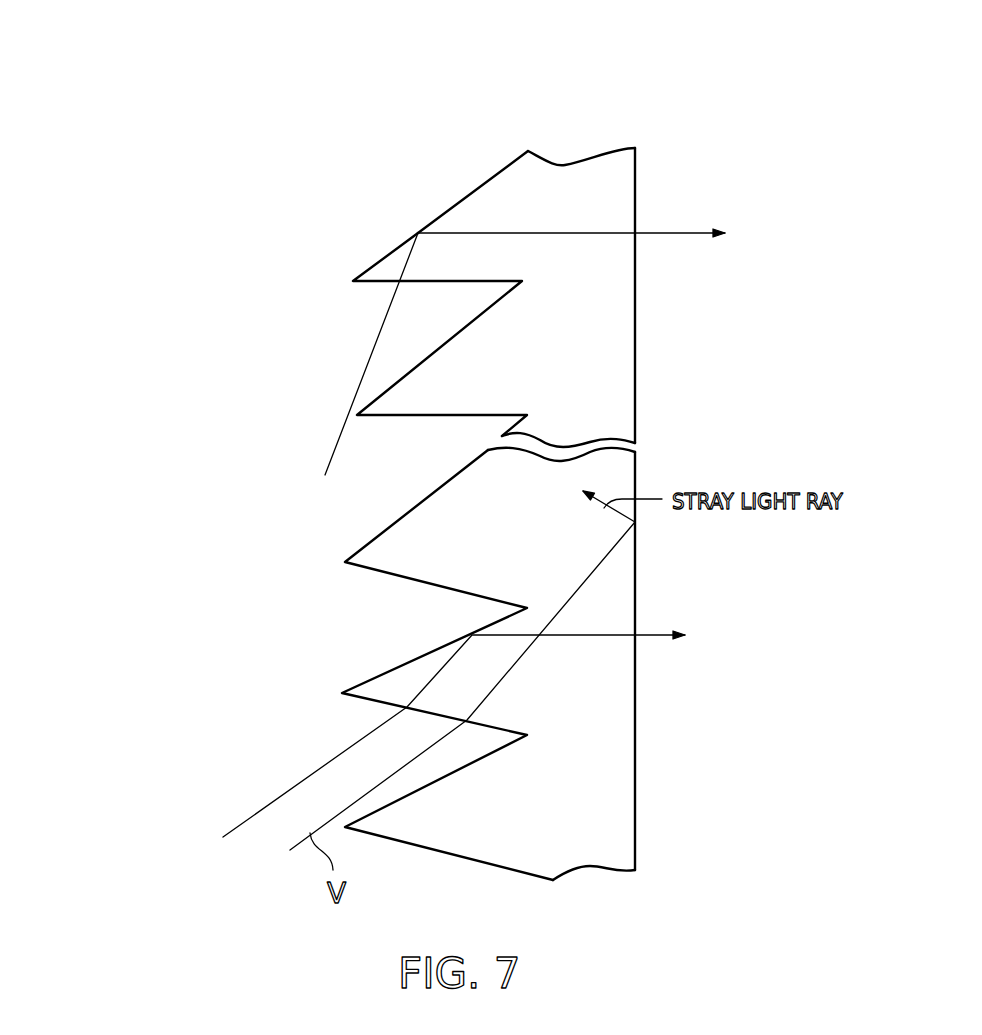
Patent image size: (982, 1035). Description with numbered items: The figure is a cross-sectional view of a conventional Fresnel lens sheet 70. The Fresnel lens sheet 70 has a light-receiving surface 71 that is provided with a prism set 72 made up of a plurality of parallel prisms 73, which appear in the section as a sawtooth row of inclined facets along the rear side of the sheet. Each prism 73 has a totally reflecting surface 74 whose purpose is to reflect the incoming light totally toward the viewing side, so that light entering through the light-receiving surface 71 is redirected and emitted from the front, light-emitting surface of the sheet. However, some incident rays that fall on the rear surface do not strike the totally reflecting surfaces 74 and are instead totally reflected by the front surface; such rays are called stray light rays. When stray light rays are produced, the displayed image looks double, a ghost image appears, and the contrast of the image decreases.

The Fresnel lens sheet 70 is at (650, 75).
The light-receiving surface 71 is at (152, 224).
The prism set 72 is at (335, 168).
The prism 73 is at (469, 214).
The totally reflecting surface 74 is at (510, 181).